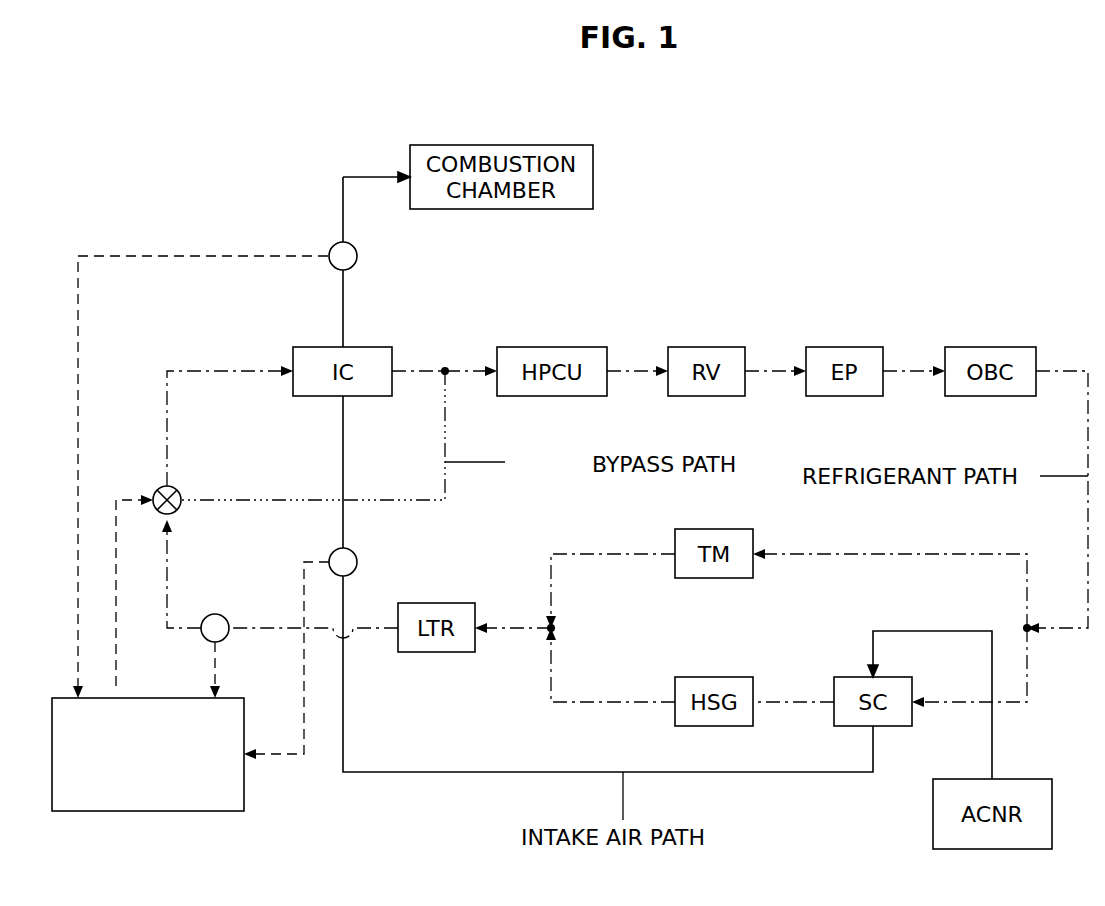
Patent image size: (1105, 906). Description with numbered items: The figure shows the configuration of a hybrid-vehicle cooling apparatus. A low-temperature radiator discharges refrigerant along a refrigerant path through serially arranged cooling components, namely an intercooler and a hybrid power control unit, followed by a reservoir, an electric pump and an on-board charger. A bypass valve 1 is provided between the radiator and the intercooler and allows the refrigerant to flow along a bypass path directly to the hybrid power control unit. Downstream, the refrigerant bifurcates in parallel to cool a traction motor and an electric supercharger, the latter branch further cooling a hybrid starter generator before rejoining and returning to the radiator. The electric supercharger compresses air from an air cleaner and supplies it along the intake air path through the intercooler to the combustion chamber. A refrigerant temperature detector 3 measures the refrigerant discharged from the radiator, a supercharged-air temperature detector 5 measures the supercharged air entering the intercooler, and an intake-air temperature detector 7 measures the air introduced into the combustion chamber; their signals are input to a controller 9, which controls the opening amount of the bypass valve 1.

The bypass valve 1 is at (156, 488).
The refrigerant temperature detector 3 is at (217, 614).
The supercharged-air temperature detector 5 is at (357, 562).
The intake-air temperature detector 7 is at (357, 256).
The controller 9 is at (127, 812).